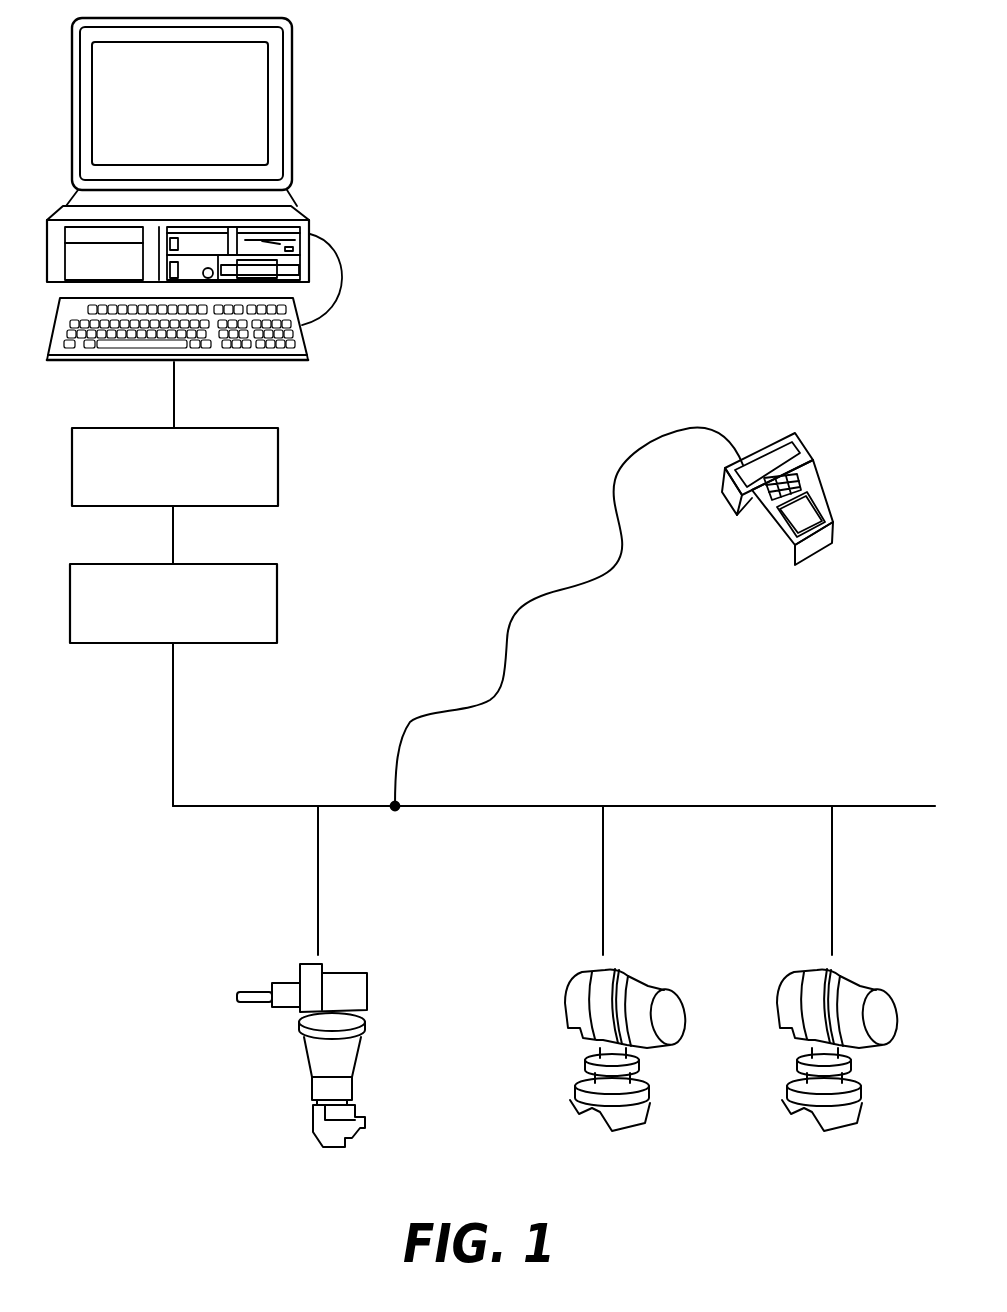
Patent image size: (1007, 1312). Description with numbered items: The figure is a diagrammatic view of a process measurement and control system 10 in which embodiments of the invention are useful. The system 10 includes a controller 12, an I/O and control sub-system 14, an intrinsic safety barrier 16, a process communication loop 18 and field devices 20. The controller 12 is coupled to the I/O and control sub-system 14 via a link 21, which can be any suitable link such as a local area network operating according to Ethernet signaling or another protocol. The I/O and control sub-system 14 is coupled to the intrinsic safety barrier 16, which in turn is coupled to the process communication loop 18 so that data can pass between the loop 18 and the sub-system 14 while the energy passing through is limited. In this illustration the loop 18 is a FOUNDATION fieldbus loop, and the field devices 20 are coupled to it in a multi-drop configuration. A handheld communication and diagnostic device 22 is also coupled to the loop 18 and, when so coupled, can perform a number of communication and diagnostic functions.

The system 10 is at (480, 285).
The controller 12 is at (292, 150).
The I/O and control sub-system 14 is at (279, 465).
The intrinsic safety barrier 16 is at (277, 603).
The process communication loop 18 is at (467, 805).
The field devices 20 is at (252, 1014).
The link 21 is at (175, 406).
The handheld communication and diagnostic device 22 is at (813, 452).